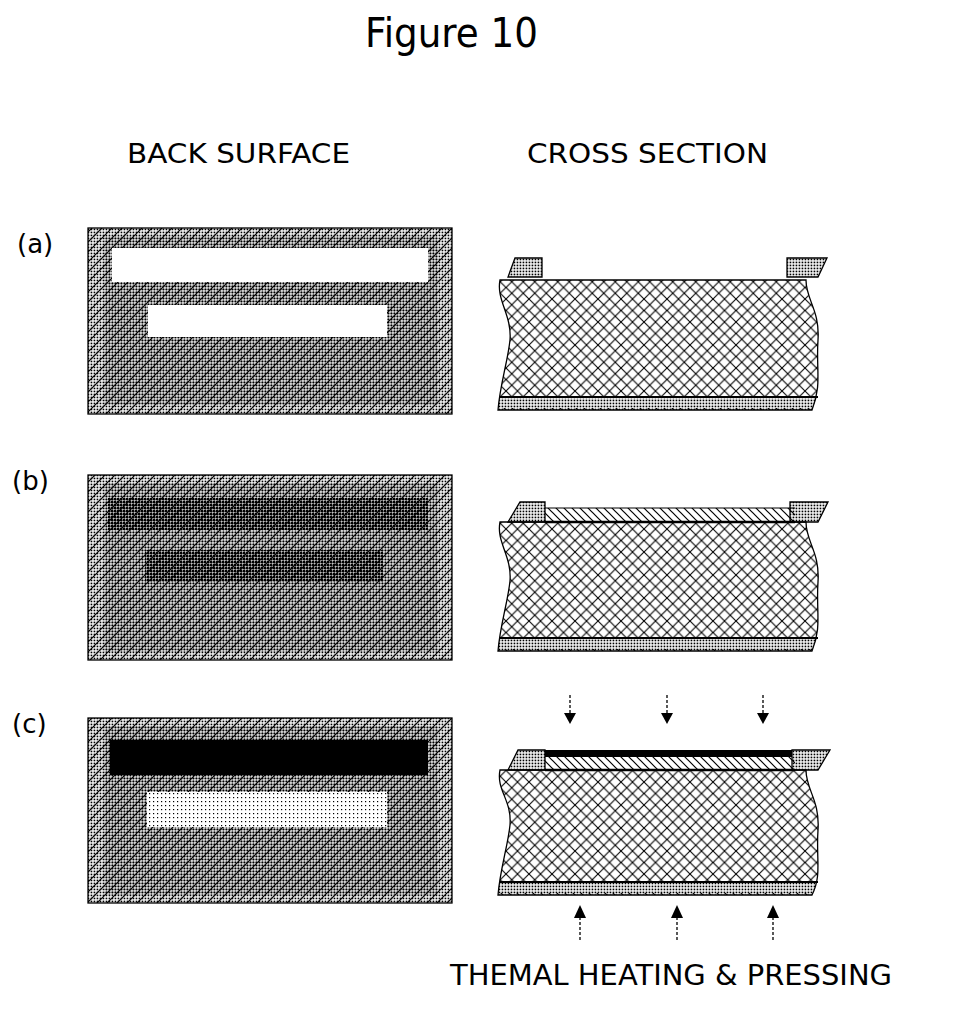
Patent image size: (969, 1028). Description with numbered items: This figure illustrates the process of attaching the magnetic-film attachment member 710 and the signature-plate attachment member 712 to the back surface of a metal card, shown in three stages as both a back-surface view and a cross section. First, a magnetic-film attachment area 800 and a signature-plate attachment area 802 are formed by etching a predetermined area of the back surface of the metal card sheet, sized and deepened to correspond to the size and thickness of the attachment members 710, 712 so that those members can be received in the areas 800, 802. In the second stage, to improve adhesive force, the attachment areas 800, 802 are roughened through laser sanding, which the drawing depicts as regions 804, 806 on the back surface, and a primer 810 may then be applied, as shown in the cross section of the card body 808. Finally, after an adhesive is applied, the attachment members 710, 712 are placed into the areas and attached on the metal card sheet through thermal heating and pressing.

The magnetic-film attachment area 800 is at (408, 255).
The signature-plate attachment area 802 is at (235, 320).
The adhesive layer area 804 is at (336, 498).
The lower adhesive area 806 is at (238, 582).
The card body 808 is at (808, 530).
The primer 810 is at (742, 508).
The magnetic-film attachment member 710 is at (360, 740).
The signature-plate attachment member 712 is at (205, 824).